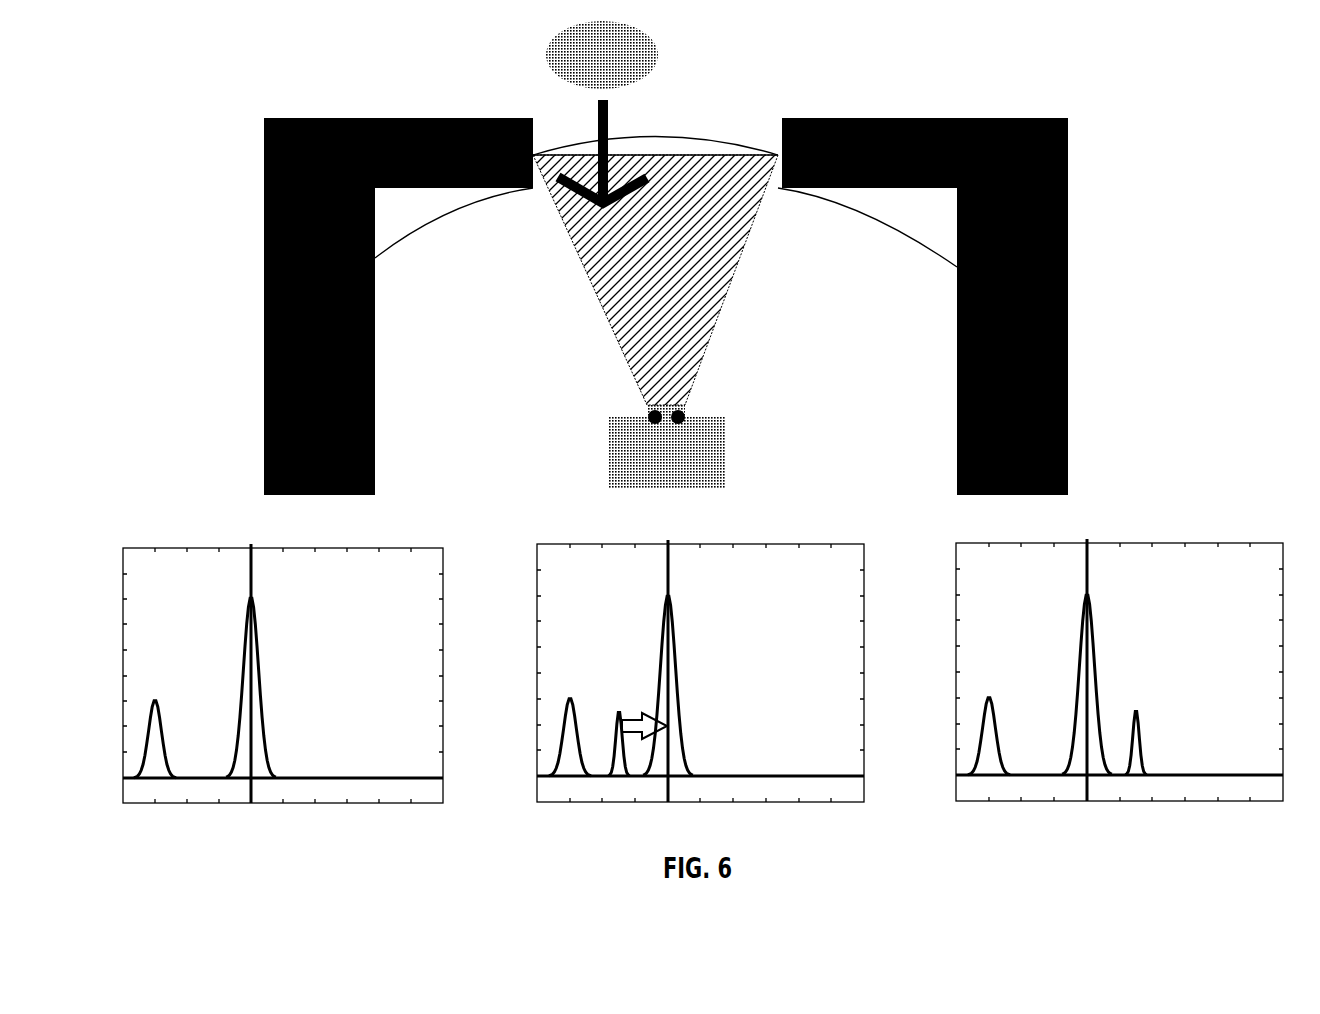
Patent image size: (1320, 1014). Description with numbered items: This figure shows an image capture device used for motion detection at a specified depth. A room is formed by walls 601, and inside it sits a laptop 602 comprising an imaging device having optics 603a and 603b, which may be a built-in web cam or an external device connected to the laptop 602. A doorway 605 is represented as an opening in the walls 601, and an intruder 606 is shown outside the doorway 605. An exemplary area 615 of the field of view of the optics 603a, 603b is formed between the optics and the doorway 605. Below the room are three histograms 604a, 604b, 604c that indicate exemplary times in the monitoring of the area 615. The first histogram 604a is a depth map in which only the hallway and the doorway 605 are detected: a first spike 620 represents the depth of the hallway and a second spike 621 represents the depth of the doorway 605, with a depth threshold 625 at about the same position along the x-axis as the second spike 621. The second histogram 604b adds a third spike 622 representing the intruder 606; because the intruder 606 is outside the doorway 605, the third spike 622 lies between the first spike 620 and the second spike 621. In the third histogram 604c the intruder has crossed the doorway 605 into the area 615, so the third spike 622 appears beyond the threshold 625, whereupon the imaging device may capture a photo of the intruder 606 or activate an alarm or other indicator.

The walls 601 is at (397, 118).
The laptop 602 is at (722, 417).
The optics 603a is at (655, 425).
The optics 603b is at (678, 425).
The first histogram 604a is at (410, 549).
The second histogram 604b is at (830, 543).
The third histogram 604c is at (1250, 542).
The doorway 605 is at (700, 155).
The intruder 606 is at (657, 52).
The area of the field of view 615 is at (718, 300).
The first spike 620 is at (156, 701).
The second spike 621 is at (262, 693).
The third spike 622 is at (619, 710).
The depth threshold 625 is at (253, 575).